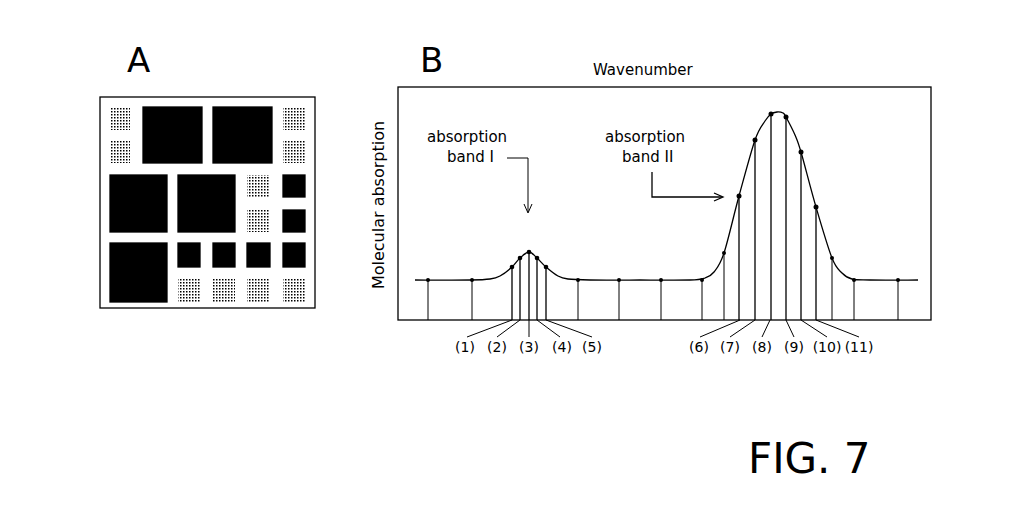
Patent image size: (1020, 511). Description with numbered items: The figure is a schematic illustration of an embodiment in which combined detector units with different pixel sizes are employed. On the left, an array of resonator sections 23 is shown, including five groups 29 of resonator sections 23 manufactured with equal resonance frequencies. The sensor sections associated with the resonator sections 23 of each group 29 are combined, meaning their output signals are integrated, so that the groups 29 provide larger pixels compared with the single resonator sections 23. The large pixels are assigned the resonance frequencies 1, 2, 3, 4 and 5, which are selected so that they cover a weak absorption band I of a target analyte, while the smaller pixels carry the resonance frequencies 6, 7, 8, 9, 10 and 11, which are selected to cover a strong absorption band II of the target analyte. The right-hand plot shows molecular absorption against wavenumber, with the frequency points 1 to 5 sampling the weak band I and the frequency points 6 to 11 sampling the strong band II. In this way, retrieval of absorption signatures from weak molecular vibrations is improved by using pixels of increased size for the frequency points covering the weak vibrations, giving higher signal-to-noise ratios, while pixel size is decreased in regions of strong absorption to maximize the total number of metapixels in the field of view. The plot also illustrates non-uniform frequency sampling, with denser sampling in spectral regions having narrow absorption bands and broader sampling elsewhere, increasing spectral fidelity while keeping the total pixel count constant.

The resonator section 23 is at (115, 152).
The group of resonator sections 29 is at (138, 293).
The resonance frequency 1 is at (172, 135).
The resonance frequency 2 is at (242, 135).
The resonance frequency 3 is at (206, 203).
The resonance frequency 4 is at (138, 203).
The resonance frequency 5 is at (137, 273).
The resonance frequency 6 is at (190, 267).
The resonance frequency 7 is at (224, 267).
The resonance frequency 8 is at (258, 267).
The resonance frequency 9 is at (305, 255).
The resonance frequency 10 is at (305, 221).
The resonance frequency 11 is at (305, 186).